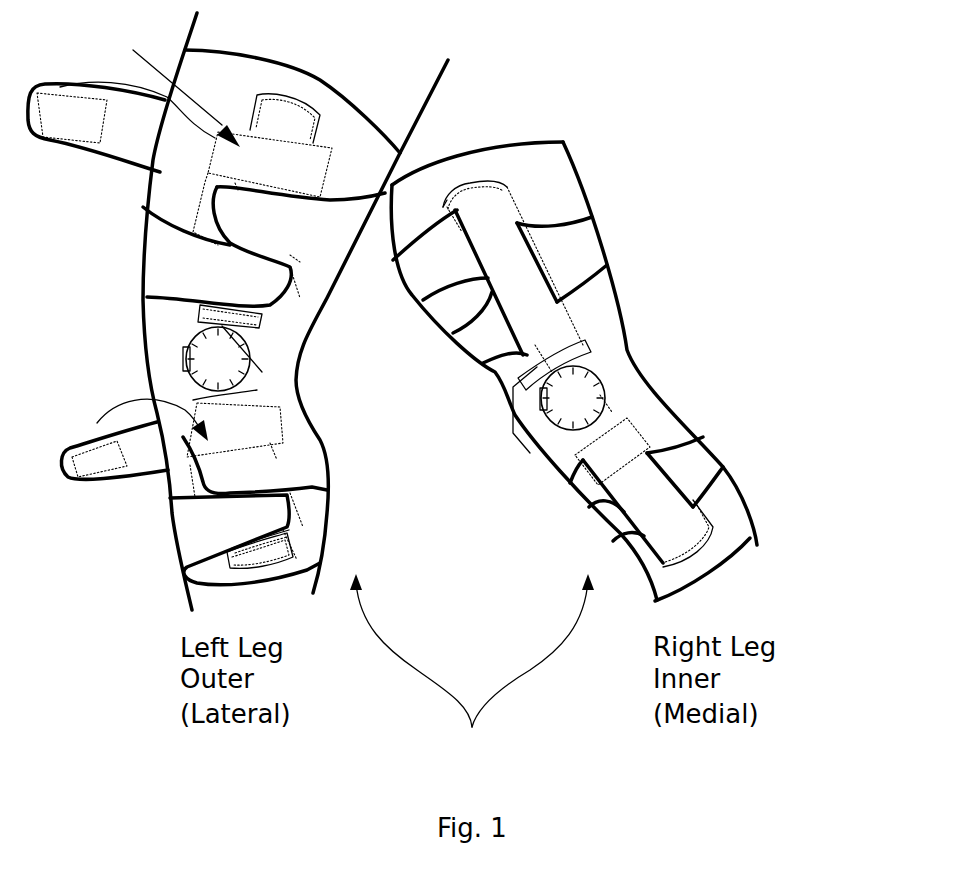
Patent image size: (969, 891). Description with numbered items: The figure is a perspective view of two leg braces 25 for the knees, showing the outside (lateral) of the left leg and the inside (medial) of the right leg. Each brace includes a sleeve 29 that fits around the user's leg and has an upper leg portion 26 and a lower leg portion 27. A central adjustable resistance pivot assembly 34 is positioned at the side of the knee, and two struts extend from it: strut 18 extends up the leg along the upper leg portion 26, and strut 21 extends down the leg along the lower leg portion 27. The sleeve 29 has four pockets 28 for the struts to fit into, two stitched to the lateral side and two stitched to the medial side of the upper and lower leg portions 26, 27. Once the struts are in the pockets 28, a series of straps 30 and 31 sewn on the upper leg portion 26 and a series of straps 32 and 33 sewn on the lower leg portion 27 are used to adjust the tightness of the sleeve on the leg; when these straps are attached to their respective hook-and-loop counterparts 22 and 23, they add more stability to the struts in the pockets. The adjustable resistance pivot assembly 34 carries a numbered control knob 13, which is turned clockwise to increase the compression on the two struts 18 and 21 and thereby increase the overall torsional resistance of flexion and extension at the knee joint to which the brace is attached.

The control knob 13 is at (215, 362).
The strut 18 is at (213, 320).
The strut 21 is at (247, 390).
The VELCRO counterpart 22 is at (90, 457).
The VELCRO counterpart 23 is at (305, 168).
The leg brace 25 is at (472, 727).
The upper leg portion 26 is at (593, 170).
The lower leg portion 27 is at (250, 552).
The pocket 28 is at (280, 93).
The sleeve 29 is at (320, 78).
The strap 30 is at (175, 267).
The strap 31 is at (573, 243).
The strap 32 is at (200, 523).
The strap 33 is at (327, 490).
The adjustable resistance pivot assembly 34 is at (513, 413).